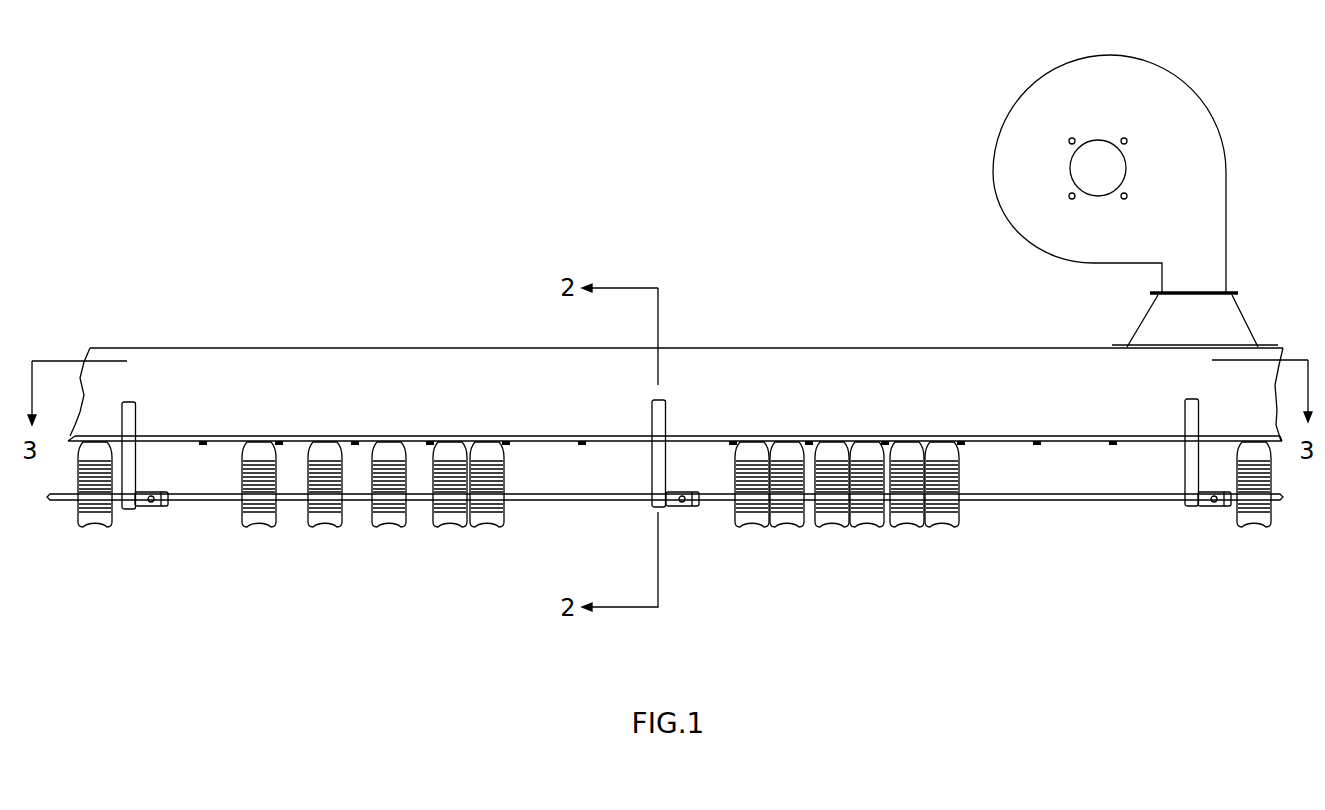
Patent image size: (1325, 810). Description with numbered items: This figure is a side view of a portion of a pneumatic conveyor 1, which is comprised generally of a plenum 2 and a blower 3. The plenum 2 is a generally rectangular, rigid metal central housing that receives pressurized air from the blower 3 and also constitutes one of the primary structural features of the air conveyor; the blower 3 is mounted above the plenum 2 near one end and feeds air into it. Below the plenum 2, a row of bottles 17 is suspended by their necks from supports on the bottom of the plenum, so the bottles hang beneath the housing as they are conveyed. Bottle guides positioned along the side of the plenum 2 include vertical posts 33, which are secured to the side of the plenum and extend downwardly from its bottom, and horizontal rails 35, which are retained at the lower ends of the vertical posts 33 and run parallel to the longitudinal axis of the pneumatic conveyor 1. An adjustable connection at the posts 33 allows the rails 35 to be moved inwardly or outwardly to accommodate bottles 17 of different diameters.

The pneumatic conveyor 1 is at (292, 348).
The plenum 2 is at (1213, 373).
The blower 3 is at (1183, 130).
The bottles 17 is at (332, 523).
The vertical posts 33 is at (663, 503).
The horizontal rails 35 is at (1100, 500).